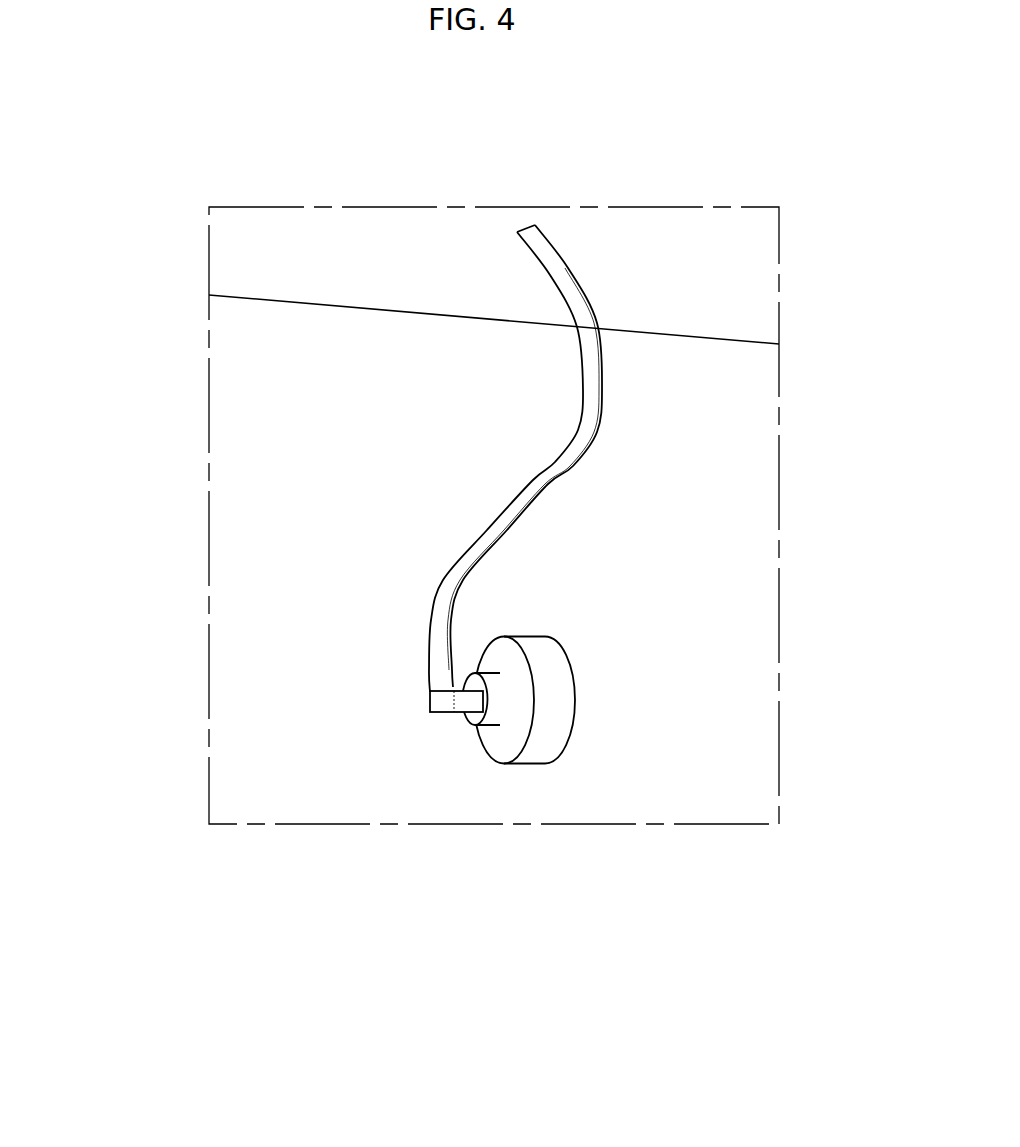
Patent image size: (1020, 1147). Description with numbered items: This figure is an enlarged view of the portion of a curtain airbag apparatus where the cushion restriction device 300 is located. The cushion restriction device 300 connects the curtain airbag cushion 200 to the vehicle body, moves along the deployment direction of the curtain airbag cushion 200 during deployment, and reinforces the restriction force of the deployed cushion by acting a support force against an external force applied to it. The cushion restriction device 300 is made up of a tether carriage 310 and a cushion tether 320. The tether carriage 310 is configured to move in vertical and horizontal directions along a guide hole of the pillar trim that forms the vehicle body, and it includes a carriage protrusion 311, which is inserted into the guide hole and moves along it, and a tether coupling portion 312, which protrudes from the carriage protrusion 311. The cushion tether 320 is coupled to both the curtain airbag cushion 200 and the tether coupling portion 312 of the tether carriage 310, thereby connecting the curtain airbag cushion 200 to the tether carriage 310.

The curtain airbag cushion 200 is at (685, 267).
The cushion restriction device 300 is at (472, 592).
The tether carriage 310 is at (550, 713).
The carriage protrusion 311 is at (472, 717).
The tether coupling portion 312 is at (440, 702).
The cushion tether 320 is at (528, 493).